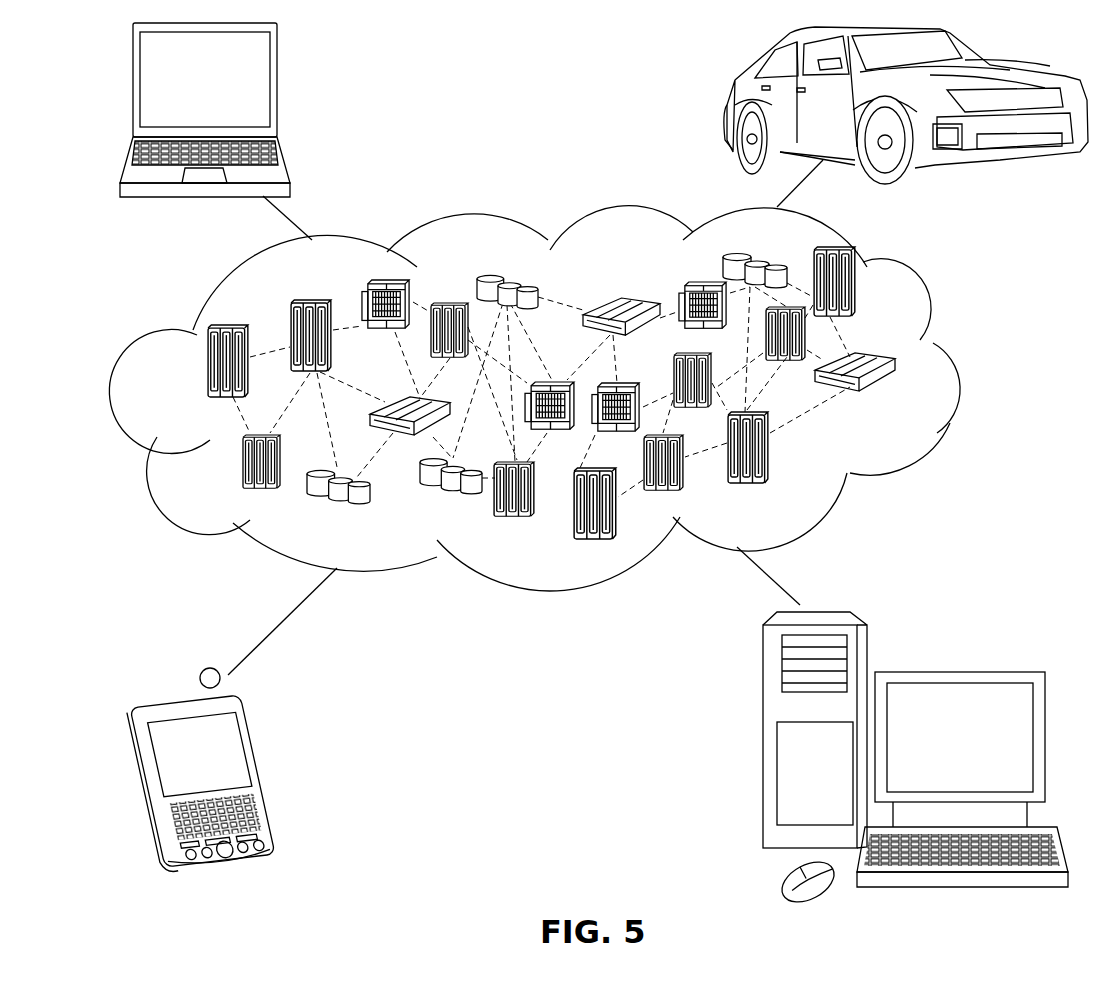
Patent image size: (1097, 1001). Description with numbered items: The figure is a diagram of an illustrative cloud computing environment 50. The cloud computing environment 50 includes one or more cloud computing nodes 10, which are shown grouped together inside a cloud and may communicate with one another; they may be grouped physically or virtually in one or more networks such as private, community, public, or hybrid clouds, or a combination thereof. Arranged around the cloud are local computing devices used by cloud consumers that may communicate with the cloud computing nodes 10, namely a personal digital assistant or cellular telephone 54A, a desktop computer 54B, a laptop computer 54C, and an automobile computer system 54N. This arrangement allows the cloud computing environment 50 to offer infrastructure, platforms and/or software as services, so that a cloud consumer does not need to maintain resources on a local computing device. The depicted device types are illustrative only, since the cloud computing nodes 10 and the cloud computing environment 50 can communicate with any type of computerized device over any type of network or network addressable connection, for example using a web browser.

The cloud computing environment 50 is at (958, 374).
The cloud computing node 10 is at (898, 402).
The personal digital assistant or cellular telephone 54A is at (288, 768).
The desktop computer 54B is at (958, 672).
The laptop computer 54C is at (279, 90).
The automobile computer system 54N is at (727, 100).